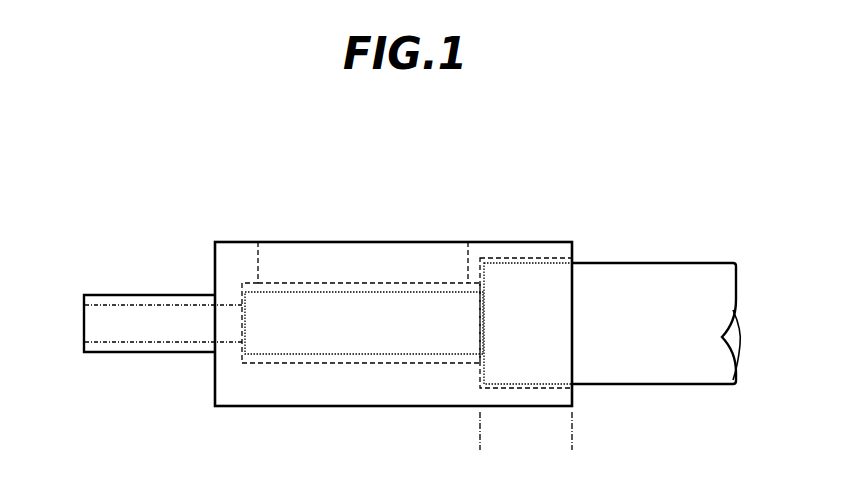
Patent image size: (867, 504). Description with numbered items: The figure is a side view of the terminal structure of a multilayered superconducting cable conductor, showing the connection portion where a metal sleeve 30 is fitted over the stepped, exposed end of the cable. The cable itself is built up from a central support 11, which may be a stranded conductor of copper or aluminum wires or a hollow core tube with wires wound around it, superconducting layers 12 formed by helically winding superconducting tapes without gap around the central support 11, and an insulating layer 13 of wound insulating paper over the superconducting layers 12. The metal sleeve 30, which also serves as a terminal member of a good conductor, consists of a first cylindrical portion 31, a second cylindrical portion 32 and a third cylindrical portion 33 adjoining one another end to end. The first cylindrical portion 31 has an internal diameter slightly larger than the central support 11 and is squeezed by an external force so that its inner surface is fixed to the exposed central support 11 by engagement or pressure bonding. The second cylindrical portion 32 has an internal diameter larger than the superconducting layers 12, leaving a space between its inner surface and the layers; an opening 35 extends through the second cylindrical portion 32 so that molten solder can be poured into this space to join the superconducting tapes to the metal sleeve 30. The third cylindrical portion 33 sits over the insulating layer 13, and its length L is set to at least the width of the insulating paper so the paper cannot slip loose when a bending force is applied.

The central support 11 is at (118, 323).
The superconducting layers 12 is at (393, 336).
The insulating layer 13 is at (638, 373).
The metal sleeve 30 is at (373, 213).
The first cylindrical portion 31 is at (140, 293).
The second cylindrical portion 32 is at (233, 242).
The third cylindrical portion 33 is at (518, 242).
The opening 35 is at (343, 255).
The length of the third cylindrical portion L is at (570, 428).